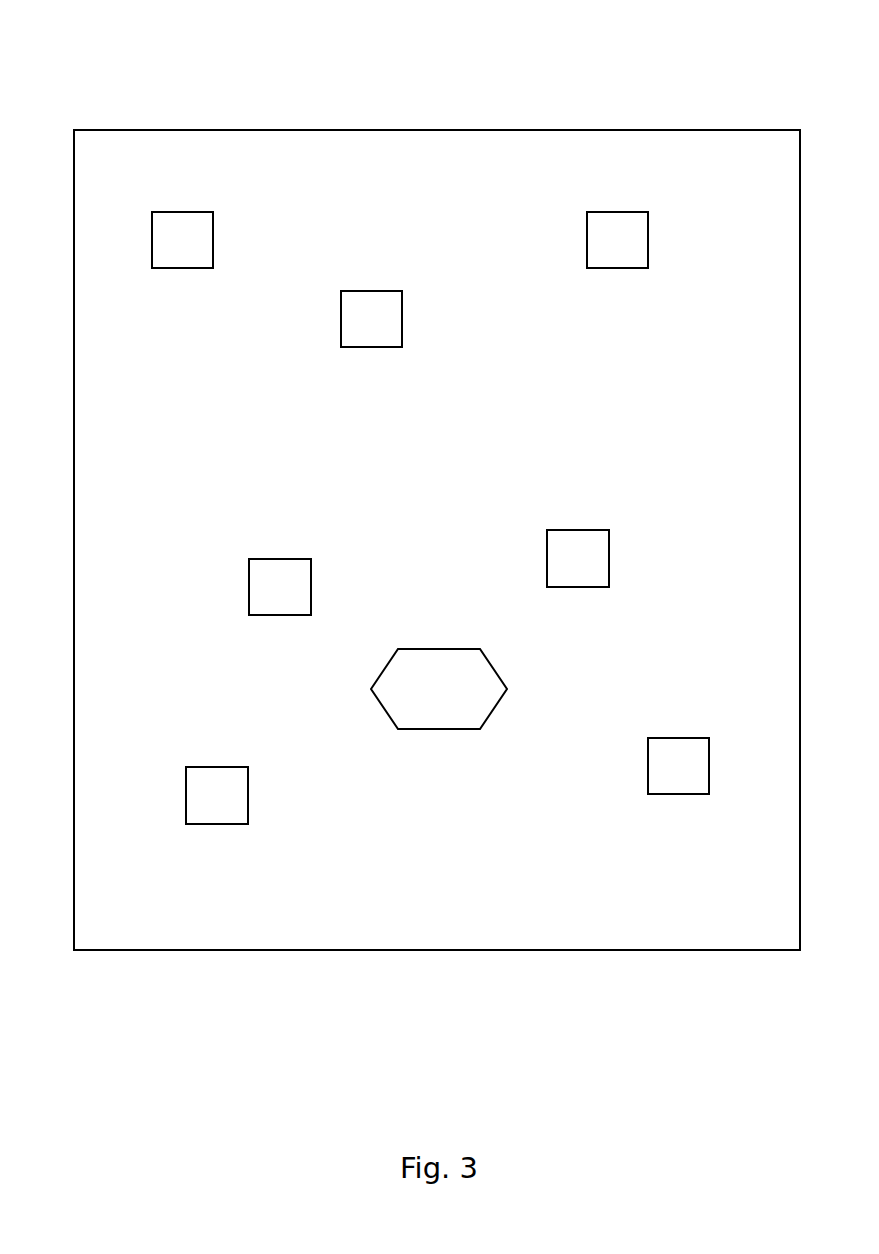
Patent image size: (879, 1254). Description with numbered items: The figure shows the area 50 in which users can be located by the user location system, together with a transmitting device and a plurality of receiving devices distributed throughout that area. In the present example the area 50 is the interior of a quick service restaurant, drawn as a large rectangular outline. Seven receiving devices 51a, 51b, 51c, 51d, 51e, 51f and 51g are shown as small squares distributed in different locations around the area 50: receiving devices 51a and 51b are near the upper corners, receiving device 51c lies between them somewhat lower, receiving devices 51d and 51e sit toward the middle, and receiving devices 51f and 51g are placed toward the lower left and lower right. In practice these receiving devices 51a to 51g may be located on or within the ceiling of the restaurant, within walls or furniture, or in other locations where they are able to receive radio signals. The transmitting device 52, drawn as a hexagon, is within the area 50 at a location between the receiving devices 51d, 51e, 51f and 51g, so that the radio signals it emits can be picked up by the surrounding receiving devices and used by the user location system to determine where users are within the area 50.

The area 50 is at (142, 77).
The receiving device 51a is at (213, 238).
The receiving device 51b is at (648, 240).
The receiving device 51c is at (402, 322).
The receiving device 51d is at (308, 589).
The receiving device 51e is at (609, 558).
The receiving device 51f is at (248, 793).
The receiving device 51g is at (681, 738).
The transmitting device 52 is at (439, 689).